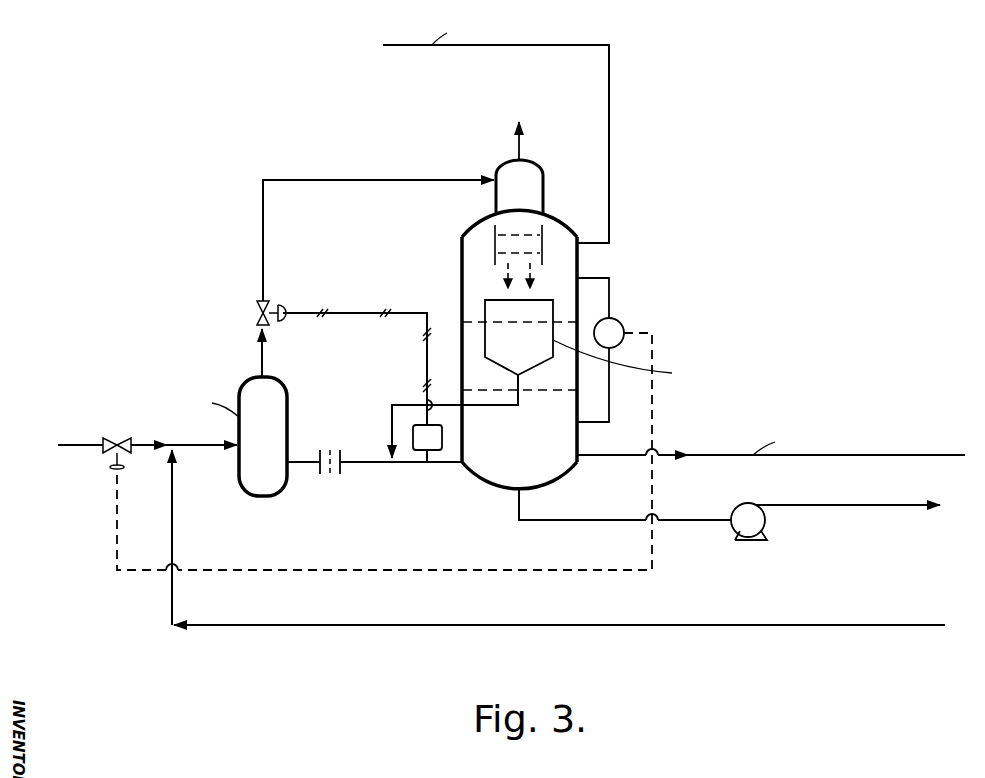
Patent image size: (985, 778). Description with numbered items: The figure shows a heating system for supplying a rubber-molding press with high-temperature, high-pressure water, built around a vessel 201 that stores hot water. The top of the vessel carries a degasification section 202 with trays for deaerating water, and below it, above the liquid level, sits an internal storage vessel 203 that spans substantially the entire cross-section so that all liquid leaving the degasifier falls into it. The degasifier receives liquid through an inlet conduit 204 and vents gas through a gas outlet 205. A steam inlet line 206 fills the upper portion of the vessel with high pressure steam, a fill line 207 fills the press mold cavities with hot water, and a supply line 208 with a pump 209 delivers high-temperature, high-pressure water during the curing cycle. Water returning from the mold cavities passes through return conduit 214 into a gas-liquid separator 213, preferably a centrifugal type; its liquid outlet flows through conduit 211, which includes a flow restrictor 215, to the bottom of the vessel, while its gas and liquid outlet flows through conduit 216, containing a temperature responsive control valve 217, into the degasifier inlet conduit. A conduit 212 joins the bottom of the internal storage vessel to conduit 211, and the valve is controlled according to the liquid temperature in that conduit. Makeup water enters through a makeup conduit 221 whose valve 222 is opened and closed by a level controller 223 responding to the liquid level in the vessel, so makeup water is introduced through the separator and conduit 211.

The vessel 201 is at (588, 263).
The degasification section 202 is at (544, 186).
The internal storage vessel 203 is at (538, 349).
The inlet conduit 204 is at (392, 178).
The gas outlet 205 is at (516, 140).
The steam inlet line 206 is at (610, 163).
The fill line 207 is at (913, 455).
The supply line 208 is at (413, 433).
The pump 209 is at (766, 522).
The conduit 211 is at (440, 463).
The conduit 212 is at (407, 405).
The gas-liquid separator 213 is at (262, 497).
The return conduit 214 is at (700, 624).
The flow restrictor 215 is at (333, 478).
The conduit 216 is at (262, 357).
The temperature responsive control valve 217 is at (258, 311).
The makeup conduit 221 is at (145, 448).
The valve 222 is at (112, 450).
The level controller 223 is at (622, 323).